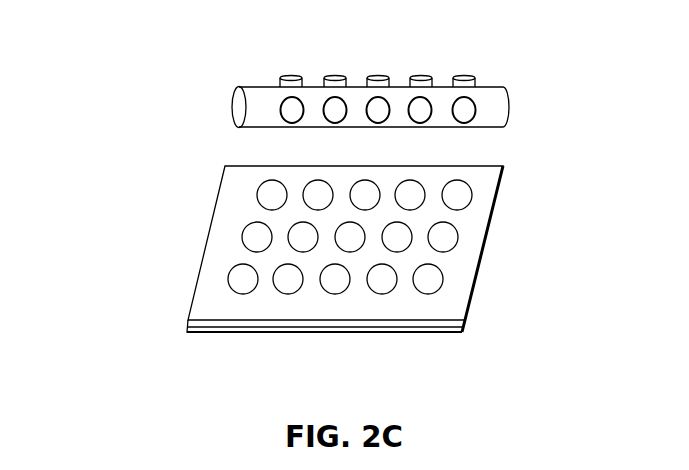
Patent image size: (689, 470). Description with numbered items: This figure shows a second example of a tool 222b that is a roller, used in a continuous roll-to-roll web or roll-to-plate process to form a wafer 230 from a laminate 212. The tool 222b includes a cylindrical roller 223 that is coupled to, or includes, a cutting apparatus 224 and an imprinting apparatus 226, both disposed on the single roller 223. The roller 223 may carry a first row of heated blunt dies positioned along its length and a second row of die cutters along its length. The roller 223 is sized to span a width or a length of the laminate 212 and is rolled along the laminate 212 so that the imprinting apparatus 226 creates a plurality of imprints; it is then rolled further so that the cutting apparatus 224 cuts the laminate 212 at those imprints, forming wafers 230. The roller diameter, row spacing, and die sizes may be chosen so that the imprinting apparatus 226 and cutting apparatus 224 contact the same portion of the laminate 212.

The tool 222b is at (160, 38).
The cylindrical roller 223 is at (498, 112).
The cutting apparatus 224 is at (475, 75).
The imprinting apparatus 226 is at (275, 103).
The laminate 212 is at (222, 223).
The wafer 230 is at (450, 242).